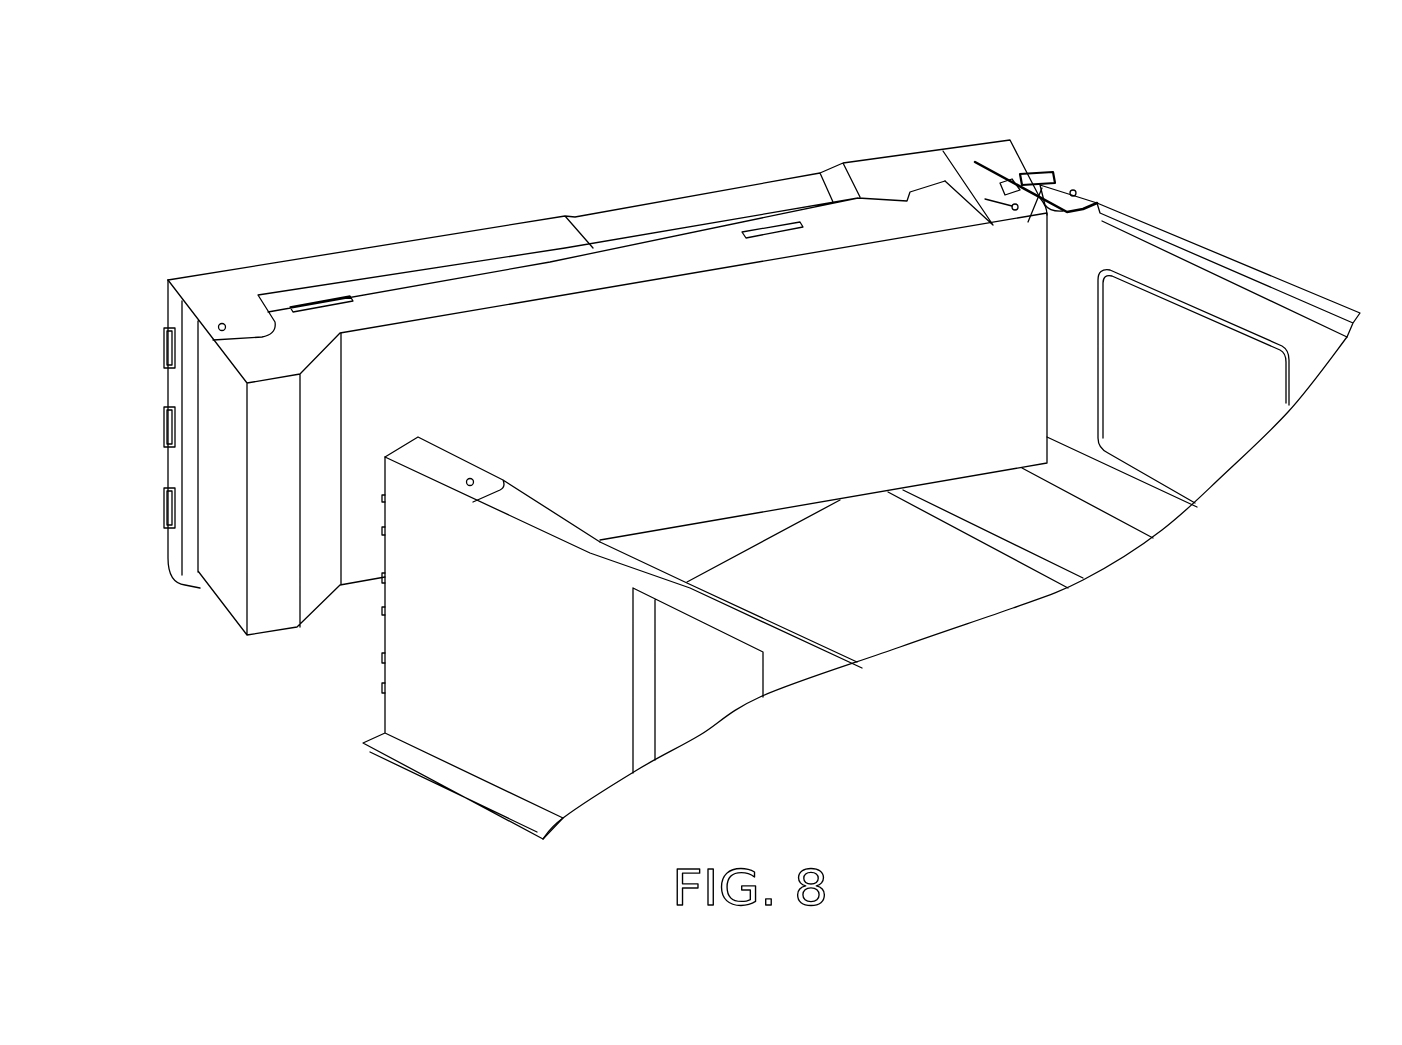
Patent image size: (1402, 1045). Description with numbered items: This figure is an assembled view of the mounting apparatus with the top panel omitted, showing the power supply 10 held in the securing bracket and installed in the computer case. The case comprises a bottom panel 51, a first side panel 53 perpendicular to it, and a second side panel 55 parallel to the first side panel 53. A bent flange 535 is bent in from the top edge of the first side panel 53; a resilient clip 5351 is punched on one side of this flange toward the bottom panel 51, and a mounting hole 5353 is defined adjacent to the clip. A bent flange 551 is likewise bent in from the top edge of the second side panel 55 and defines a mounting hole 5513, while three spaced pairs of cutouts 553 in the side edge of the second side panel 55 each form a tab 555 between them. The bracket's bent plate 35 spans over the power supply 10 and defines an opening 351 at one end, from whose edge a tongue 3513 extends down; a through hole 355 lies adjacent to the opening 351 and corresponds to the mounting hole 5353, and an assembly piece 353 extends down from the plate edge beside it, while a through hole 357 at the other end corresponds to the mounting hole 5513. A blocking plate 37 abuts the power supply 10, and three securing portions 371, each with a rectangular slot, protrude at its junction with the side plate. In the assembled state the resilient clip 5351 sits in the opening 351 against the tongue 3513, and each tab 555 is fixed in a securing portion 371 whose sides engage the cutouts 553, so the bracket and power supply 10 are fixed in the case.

The power supply 10 is at (260, 603).
The bent plate 35 is at (318, 268).
The opening 351 is at (978, 170).
The tongue 3513 is at (1040, 172).
The assembly piece 353 is at (1076, 190).
The through hole 355 is at (943, 150).
The through hole 357 is at (222, 324).
The blocking plate 37 is at (175, 540).
The securing portion 371 is at (166, 418).
The bottom panel 51 is at (987, 602).
The first side panel 53 is at (1298, 345).
The bent flange 535 is at (1207, 253).
The resilient clip 5351 is at (1057, 187).
The mounting hole 5353 is at (1078, 205).
The second side panel 55 is at (595, 752).
The bent flange 551 is at (802, 648).
The mounting hole 5513 is at (470, 478).
The cutouts 553 is at (383, 610).
The tab 555 is at (383, 670).